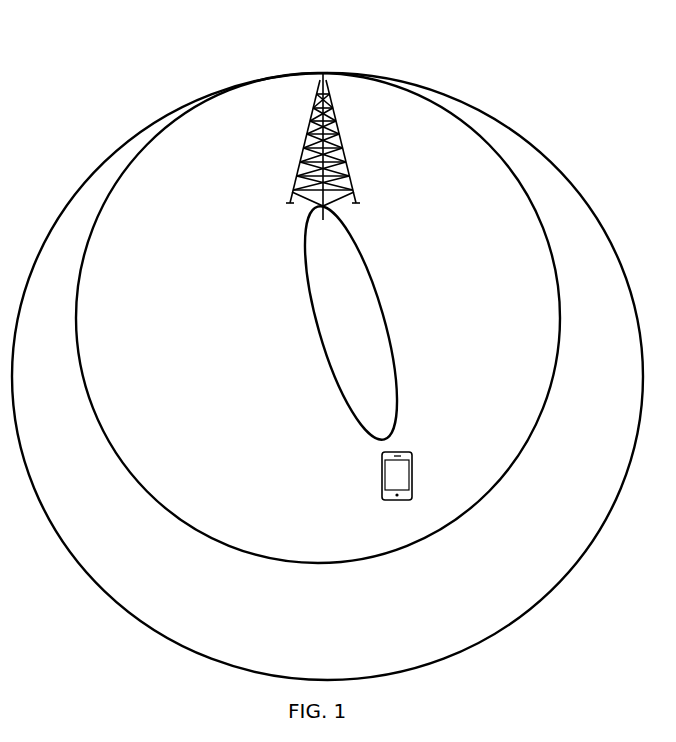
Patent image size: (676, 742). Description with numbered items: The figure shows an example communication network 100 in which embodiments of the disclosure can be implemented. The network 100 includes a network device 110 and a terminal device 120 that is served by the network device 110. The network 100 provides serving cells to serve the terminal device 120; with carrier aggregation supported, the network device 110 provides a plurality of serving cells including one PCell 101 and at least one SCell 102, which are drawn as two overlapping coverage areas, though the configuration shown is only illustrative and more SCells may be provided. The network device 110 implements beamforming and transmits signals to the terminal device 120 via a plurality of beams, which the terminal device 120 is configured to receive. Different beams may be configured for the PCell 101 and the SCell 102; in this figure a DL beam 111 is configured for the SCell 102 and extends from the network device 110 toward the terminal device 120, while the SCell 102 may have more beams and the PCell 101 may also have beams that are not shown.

The communication network 100 is at (196, 50).
The PCell 101 is at (89, 176).
The SCell 102 is at (235, 552).
The network device 110 is at (336, 140).
The DL beam 111 is at (363, 266).
The terminal device 120 is at (398, 452).